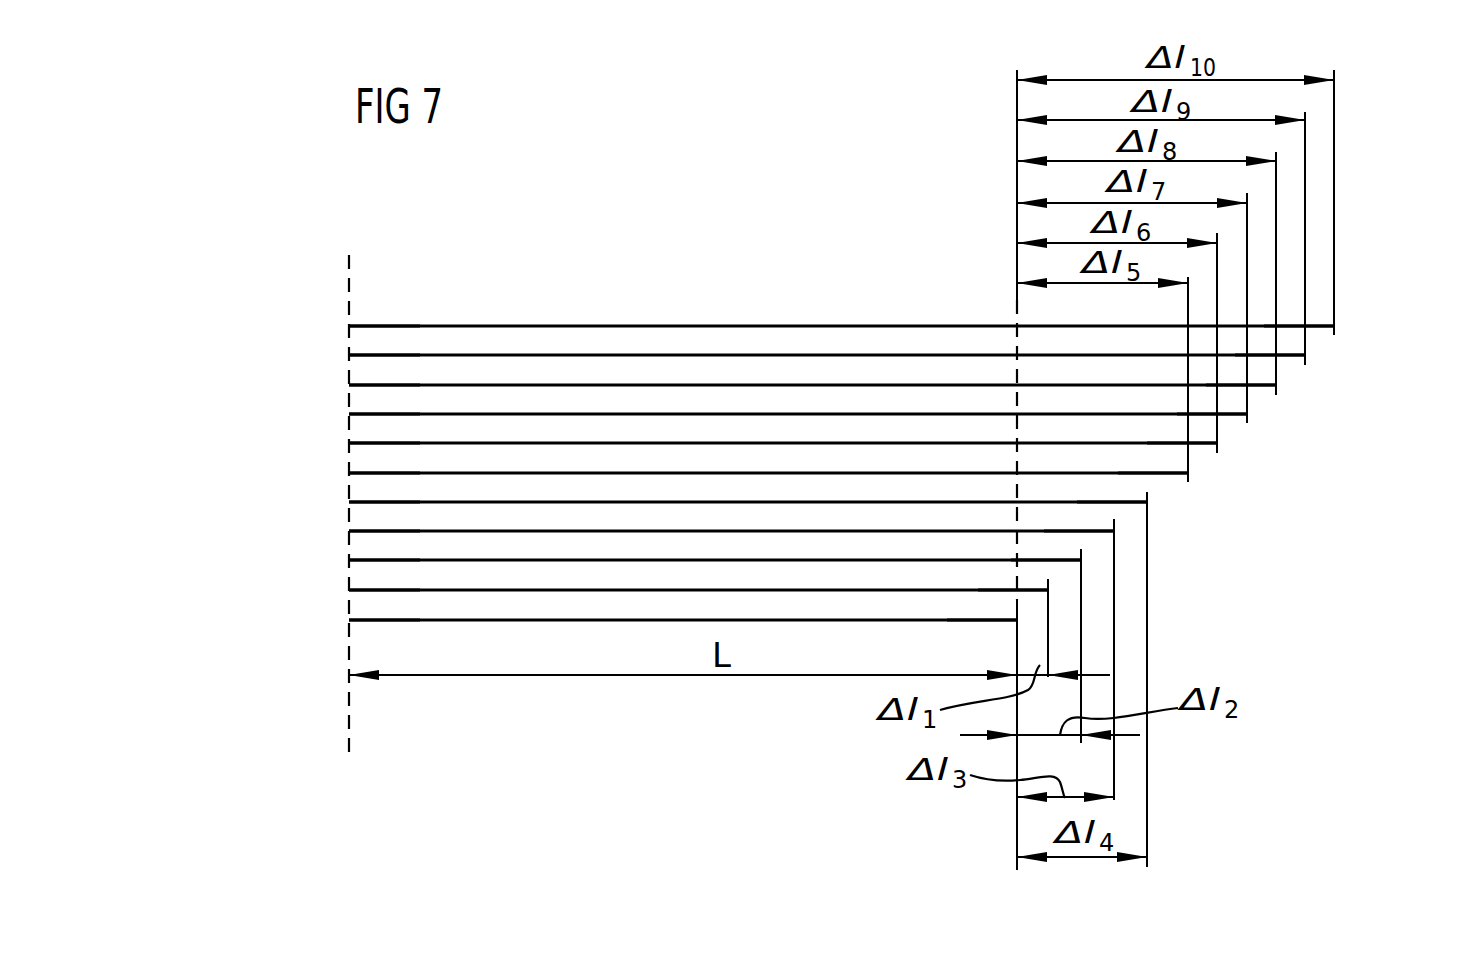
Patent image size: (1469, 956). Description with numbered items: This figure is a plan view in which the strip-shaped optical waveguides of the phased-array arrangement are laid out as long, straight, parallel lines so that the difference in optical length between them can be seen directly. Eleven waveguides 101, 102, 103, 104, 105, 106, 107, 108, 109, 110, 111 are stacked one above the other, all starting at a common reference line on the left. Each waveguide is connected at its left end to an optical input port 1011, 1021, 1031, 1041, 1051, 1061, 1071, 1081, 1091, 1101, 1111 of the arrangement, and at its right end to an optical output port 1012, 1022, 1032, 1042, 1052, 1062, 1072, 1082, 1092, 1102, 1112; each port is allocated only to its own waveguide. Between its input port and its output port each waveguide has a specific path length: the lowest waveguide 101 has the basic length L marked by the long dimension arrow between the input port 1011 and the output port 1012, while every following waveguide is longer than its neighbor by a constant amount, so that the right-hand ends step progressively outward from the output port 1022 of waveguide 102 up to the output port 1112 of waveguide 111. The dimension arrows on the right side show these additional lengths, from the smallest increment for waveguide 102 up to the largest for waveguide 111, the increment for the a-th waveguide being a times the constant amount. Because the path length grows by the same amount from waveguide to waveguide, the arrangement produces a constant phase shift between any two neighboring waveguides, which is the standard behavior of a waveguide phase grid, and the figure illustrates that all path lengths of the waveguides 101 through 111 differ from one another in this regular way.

The strip-shaped optical waveguide 101 is at (413, 621).
The strip-shaped optical waveguide 102 is at (473, 591).
The strip-shaped optical waveguide 103 is at (537, 561).
The strip-shaped optical waveguide 104 is at (605, 532).
The strip-shaped optical waveguide 105 is at (677, 503).
The strip-shaped optical waveguide 106 is at (403, 474).
The strip-shaped optical waveguide 107 is at (523, 444).
The strip-shaped optical waveguide 108 is at (625, 415).
The strip-shaped optical waveguide 109 is at (727, 386).
The strip-shaped optical waveguide 110 is at (828, 355).
The strip-shaped optical waveguide 111 is at (917, 327).
The optical input port 1011 is at (349, 620).
The optical input port 1021 is at (349, 590).
The optical input port 1031 is at (349, 560).
The optical input port 1041 is at (349, 531).
The optical input port 1051 is at (349, 502).
The optical input port 1061 is at (349, 473).
The optical input port 1071 is at (349, 443).
The optical input port 1081 is at (349, 414).
The optical input port 1091 is at (349, 385).
The optical input port 1101 is at (349, 355).
The optical input port 1111 is at (349, 326).
The optical output port 1012 is at (1017, 620).
The optical output port 1022 is at (1048, 590).
The optical output port 1032 is at (1081, 560).
The optical output port 1042 is at (1114, 531).
The optical output port 1052 is at (1147, 502).
The optical output port 1062 is at (1188, 473).
The optical output port 1072 is at (1217, 443).
The optical output port 1082 is at (1247, 414).
The optical output port 1092 is at (1276, 385).
The optical output port 1102 is at (1305, 355).
The optical output port 1112 is at (1334, 326).